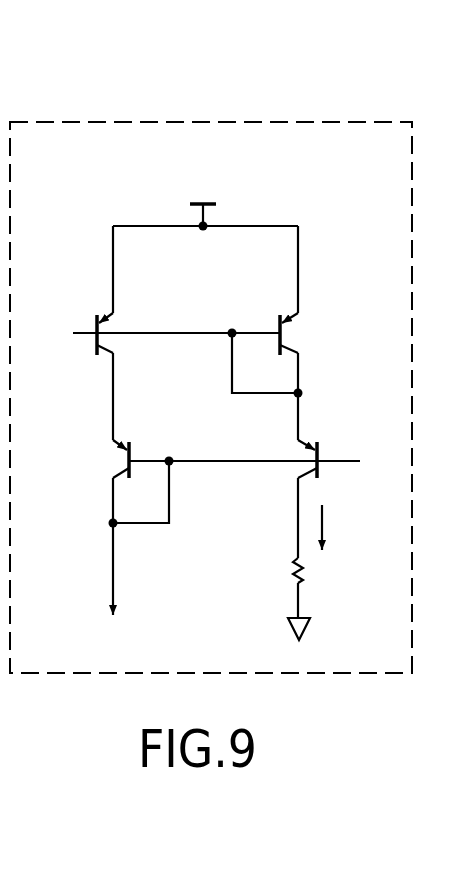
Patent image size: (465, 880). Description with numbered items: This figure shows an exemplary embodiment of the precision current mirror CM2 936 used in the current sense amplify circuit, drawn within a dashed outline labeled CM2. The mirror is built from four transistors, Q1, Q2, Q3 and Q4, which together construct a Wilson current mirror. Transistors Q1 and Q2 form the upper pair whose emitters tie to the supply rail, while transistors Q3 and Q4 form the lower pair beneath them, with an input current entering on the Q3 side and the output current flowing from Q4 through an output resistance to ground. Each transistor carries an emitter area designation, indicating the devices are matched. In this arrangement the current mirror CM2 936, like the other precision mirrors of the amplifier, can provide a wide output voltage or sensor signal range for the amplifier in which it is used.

The current mirror CM2 936 is at (283, 121).
The current mirror CM2 is at (211, 397).
The transistor Q1 is at (138, 341).
The transistor Q2 is at (322, 341).
The transistor Q3 is at (92, 466).
The transistor Q4 is at (278, 462).